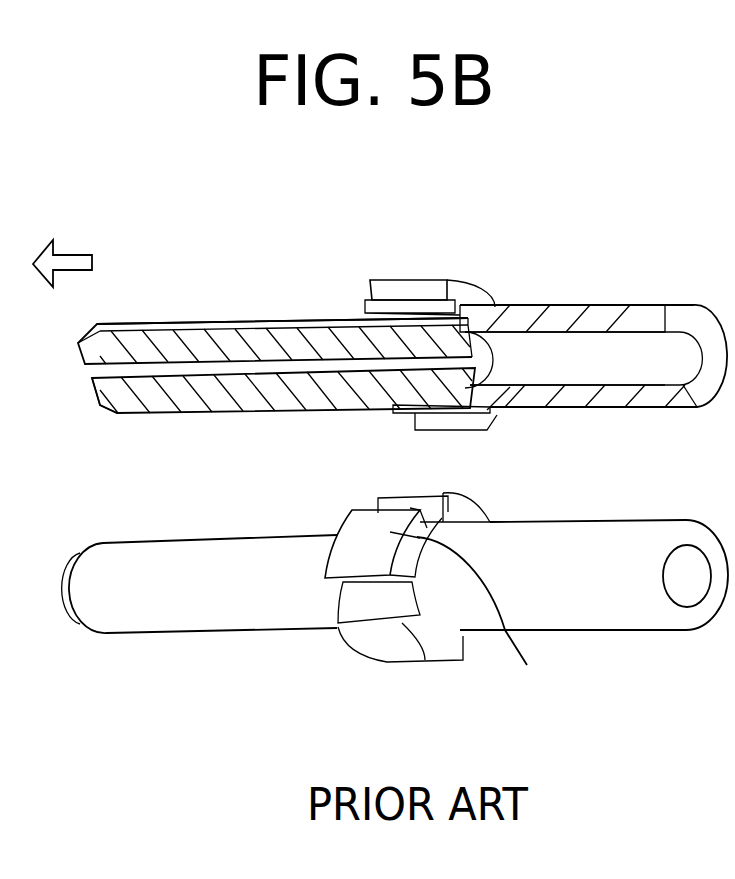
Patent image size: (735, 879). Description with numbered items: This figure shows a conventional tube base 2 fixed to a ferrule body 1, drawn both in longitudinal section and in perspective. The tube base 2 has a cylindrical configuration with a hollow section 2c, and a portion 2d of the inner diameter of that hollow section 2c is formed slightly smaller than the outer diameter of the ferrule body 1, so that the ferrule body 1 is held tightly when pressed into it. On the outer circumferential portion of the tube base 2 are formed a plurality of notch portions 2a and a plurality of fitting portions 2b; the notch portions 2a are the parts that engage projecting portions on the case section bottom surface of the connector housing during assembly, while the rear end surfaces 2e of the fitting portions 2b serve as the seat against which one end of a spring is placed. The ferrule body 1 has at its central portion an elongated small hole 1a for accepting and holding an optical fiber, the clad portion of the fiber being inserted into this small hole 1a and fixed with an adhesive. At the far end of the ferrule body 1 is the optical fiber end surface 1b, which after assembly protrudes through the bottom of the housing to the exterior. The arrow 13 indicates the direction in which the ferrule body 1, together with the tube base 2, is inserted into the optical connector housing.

The ferrule body 1 is at (153, 560).
The small hole 1a is at (275, 354).
The optical fiber end surface 1b is at (81, 385).
The tube base 2 is at (575, 402).
The notch portions 2a is at (397, 290).
The fitting portions 2b is at (390, 495).
The hollow section 2c is at (570, 357).
The inner diameter portion 2d is at (460, 302).
The rear end surfaces 2e is at (473, 512).
The arrow 13 is at (80, 254).